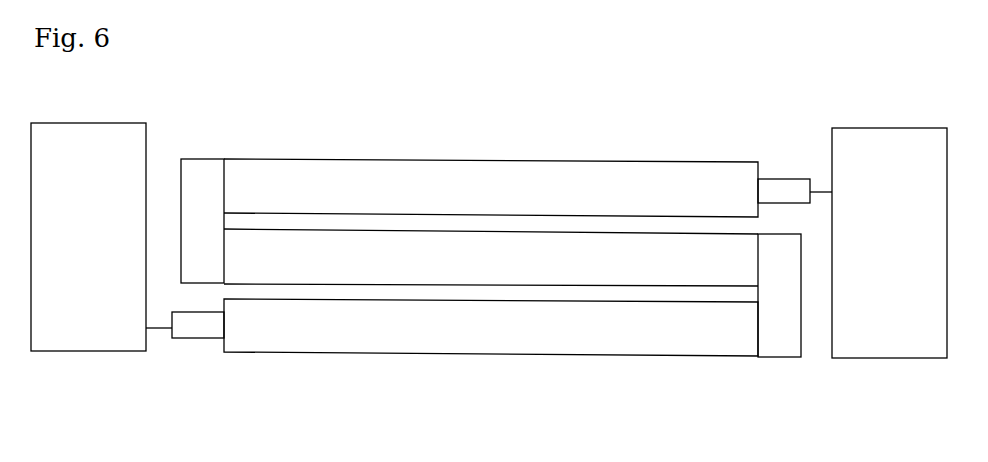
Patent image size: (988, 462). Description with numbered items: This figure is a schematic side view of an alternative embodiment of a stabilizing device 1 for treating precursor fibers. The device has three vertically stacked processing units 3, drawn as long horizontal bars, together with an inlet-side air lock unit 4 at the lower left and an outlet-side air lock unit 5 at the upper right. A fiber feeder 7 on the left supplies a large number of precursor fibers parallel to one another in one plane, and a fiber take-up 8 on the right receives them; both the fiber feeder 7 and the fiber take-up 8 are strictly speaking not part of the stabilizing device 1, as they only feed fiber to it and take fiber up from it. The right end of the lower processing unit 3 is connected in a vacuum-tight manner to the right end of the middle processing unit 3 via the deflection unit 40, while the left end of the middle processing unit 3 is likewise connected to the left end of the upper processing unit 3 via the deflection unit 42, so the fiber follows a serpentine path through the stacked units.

The stabilizing device 1 is at (738, 88).
The processing unit 3 is at (307, 157).
The inlet-side air lock unit 4 is at (188, 340).
The outlet-side air lock unit 5 is at (781, 176).
The fiber feeder 7 is at (133, 120).
The fiber take-up 8 is at (866, 124).
The deflection unit 40 is at (785, 360).
The deflection unit 42 is at (207, 157).